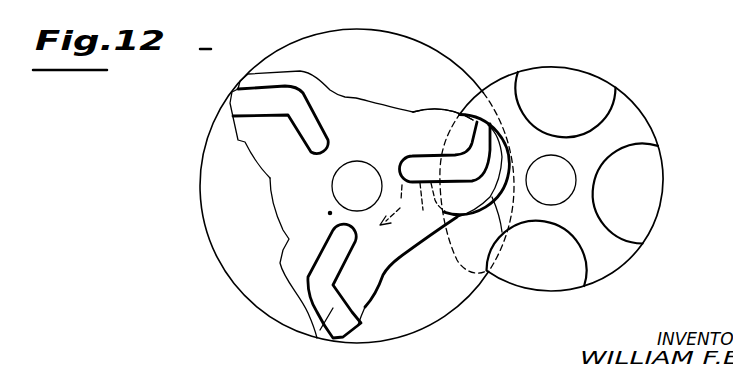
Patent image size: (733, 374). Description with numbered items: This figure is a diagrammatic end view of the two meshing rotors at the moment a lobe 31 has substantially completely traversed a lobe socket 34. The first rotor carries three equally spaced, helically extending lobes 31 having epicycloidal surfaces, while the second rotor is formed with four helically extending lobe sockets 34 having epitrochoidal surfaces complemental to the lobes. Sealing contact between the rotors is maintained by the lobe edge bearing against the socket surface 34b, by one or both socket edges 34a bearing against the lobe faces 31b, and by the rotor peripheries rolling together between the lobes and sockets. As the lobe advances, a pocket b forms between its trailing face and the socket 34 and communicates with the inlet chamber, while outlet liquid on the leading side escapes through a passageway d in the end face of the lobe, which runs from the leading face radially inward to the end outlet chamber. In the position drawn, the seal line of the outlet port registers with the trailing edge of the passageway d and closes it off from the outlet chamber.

The lobe 31 is at (362, 293).
The lobe face 31b is at (427, 117).
The lobe socket 34 is at (593, 92).
The socket edge 34a is at (550, 44).
The socket surface 34b is at (523, 108).
The pocket b is at (502, 232).
The passageway d is at (333, 308).